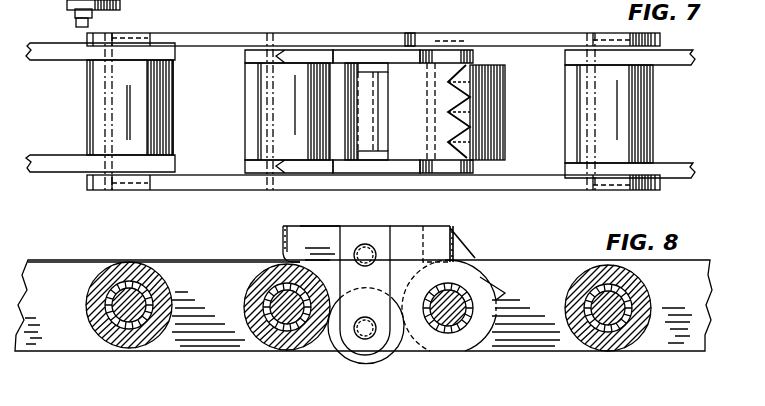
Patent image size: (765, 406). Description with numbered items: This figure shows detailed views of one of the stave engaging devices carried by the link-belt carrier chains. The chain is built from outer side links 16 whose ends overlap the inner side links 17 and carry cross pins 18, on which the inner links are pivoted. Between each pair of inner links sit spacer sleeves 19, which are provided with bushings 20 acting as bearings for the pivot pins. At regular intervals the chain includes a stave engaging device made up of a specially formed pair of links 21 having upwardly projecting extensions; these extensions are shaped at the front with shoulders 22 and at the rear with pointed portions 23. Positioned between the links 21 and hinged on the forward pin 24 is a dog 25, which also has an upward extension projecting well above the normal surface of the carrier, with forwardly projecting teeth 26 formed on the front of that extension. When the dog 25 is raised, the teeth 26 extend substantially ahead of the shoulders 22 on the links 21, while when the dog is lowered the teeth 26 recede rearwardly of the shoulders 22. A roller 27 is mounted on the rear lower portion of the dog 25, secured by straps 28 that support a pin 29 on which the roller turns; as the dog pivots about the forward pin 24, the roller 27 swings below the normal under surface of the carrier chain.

In FIG. 7, the outer side links 16 is at (190, 33).
In FIG. 8, the outer side links 16 is at (200, 345).
In FIG. 7, the inner side links 17 is at (57, 52).
In FIG. 8, the inner side links 17 is at (62, 265).
In FIG. 7, the cross pins 18 is at (140, 102).
In FIG. 8, the cross pins 18 is at (132, 284).
In FIG. 7, the spacer sleeves 19 is at (90, 128).
In FIG. 8, the spacer sleeves 19 is at (90, 318).
In FIG. 7, the bushings 20 is at (148, 135).
In FIG. 8, the bushings 20 is at (147, 318).
In FIG. 7, the links 21 is at (364, 50).
In FIG. 8, the links 21 is at (320, 232).
In FIG. 7, the shoulders 22 is at (414, 34).
In FIG. 8, the shoulders 22 is at (424, 238).
In FIG. 7, the pointed portions 23 is at (272, 58).
In FIG. 8, the pointed portions 23 is at (280, 235).
In FIG. 7, the forward pin 24 is at (462, 35).
In FIG. 8, the forward pin 24 is at (451, 326).
In FIG. 8, the dog 25 is at (422, 340).
In FIG. 7, the teeth 26 is at (462, 131).
In FIG. 8, the teeth 26 is at (460, 238).
In FIG. 8, the roller 27 is at (358, 366).
In FIG. 7, the straps 28 is at (405, 62).
In FIG. 8, the straps 28 is at (364, 233).
In FIG. 7, the pin 29 is at (358, 85).
In FIG. 8, the pin 29 is at (357, 332).